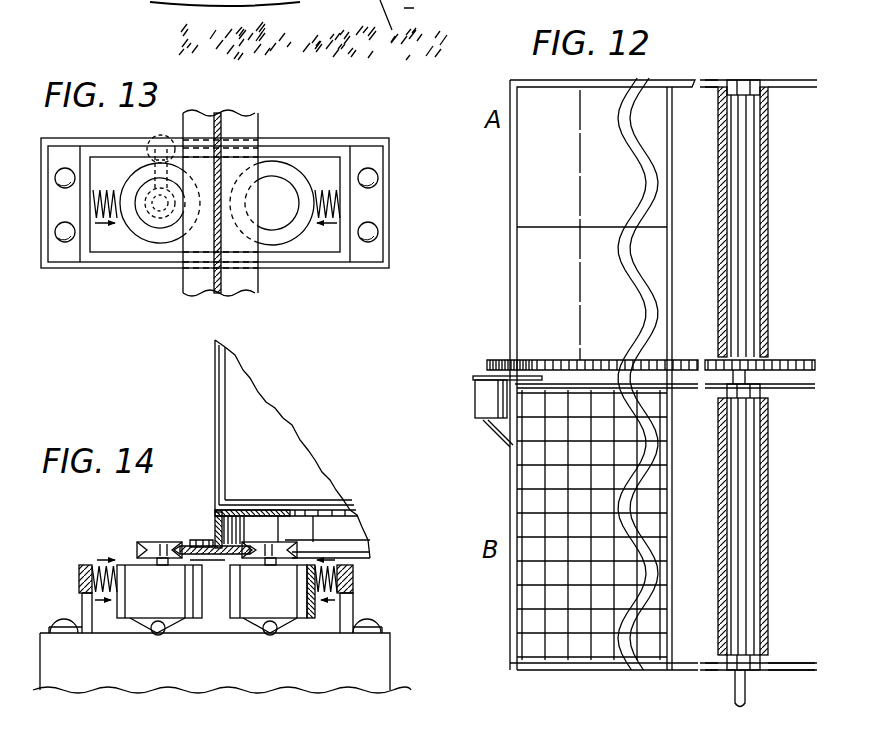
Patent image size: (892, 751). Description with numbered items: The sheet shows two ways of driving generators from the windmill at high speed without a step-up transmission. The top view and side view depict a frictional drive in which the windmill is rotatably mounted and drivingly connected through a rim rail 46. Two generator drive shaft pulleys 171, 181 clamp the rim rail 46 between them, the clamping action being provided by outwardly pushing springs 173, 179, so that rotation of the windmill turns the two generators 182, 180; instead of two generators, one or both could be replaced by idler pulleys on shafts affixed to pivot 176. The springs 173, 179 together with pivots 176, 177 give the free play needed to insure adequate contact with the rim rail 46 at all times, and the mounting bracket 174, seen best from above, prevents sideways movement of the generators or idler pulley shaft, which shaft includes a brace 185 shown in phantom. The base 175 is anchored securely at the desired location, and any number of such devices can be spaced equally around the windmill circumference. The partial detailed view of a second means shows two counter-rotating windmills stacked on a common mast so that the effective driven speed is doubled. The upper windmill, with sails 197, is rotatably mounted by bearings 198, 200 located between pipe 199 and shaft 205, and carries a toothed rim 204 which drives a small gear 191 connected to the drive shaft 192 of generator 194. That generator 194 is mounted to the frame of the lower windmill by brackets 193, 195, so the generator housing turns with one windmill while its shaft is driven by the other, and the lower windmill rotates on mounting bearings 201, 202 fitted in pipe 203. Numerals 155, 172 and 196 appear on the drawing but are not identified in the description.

In FIG. 13, the rim rail 46 is at (261, 128).
In FIG. 14, the rim rail 46 is at (214, 528).
In FIG. 13, the ground 155 is at (313, 30).
In FIG. 13, the generator drive shaft pulley 171 is at (163, 233).
In FIG. 14, the generator drive shaft pulley 171 is at (165, 540).
In FIG. 14, the spring 172 is at (124, 562).
In FIG. 14, the spring 173 is at (91, 564).
In FIG. 13, the mounting bracket 174 is at (135, 264).
In FIG. 14, the mounting bracket 174 is at (356, 580).
In FIG. 13, the base 175 is at (370, 270).
In FIG. 14, the base 175 is at (392, 668).
In FIG. 14, the pivot 176 is at (167, 634).
In FIG. 14, the pivot 177 is at (265, 630).
In FIG. 14, the spring 179 is at (320, 600).
In FIG. 13, the generator 180 is at (306, 234).
In FIG. 14, the generator 180 is at (305, 625).
In FIG. 13, the generator drive shaft pulley 181 is at (283, 233).
In FIG. 14, the generator drive shaft pulley 181 is at (286, 541).
In FIG. 13, the generator 182 is at (124, 236).
In FIG. 14, the generator 182 is at (125, 625).
In FIG. 13, the brace 185 is at (152, 172).
In FIG. 12, the small gear 191 is at (491, 357).
In FIG. 12, the drive shaft 192 is at (481, 374).
In FIG. 12, the bracket 193 is at (476, 390).
In FIG. 12, the generator 194 is at (474, 407).
In FIG. 12, the bracket 195 is at (492, 440).
In FIG. 12, the grid screen 196 is at (526, 573).
In FIG. 12, the sails 197 is at (533, 224).
In FIG. 12, the bearing 198 is at (751, 79).
In FIG. 12, the pipe 199 is at (770, 181).
In FIG. 12, the bearing 200 is at (751, 356).
In FIG. 12, the mounting bearing 201 is at (753, 401).
In FIG. 12, the mounting bearing 202 is at (750, 673).
In FIG. 12, the pipe 203 is at (790, 563).
In FIG. 12, the toothed rim 204 is at (652, 357).
In FIG. 12, the shaft 205 is at (750, 296).